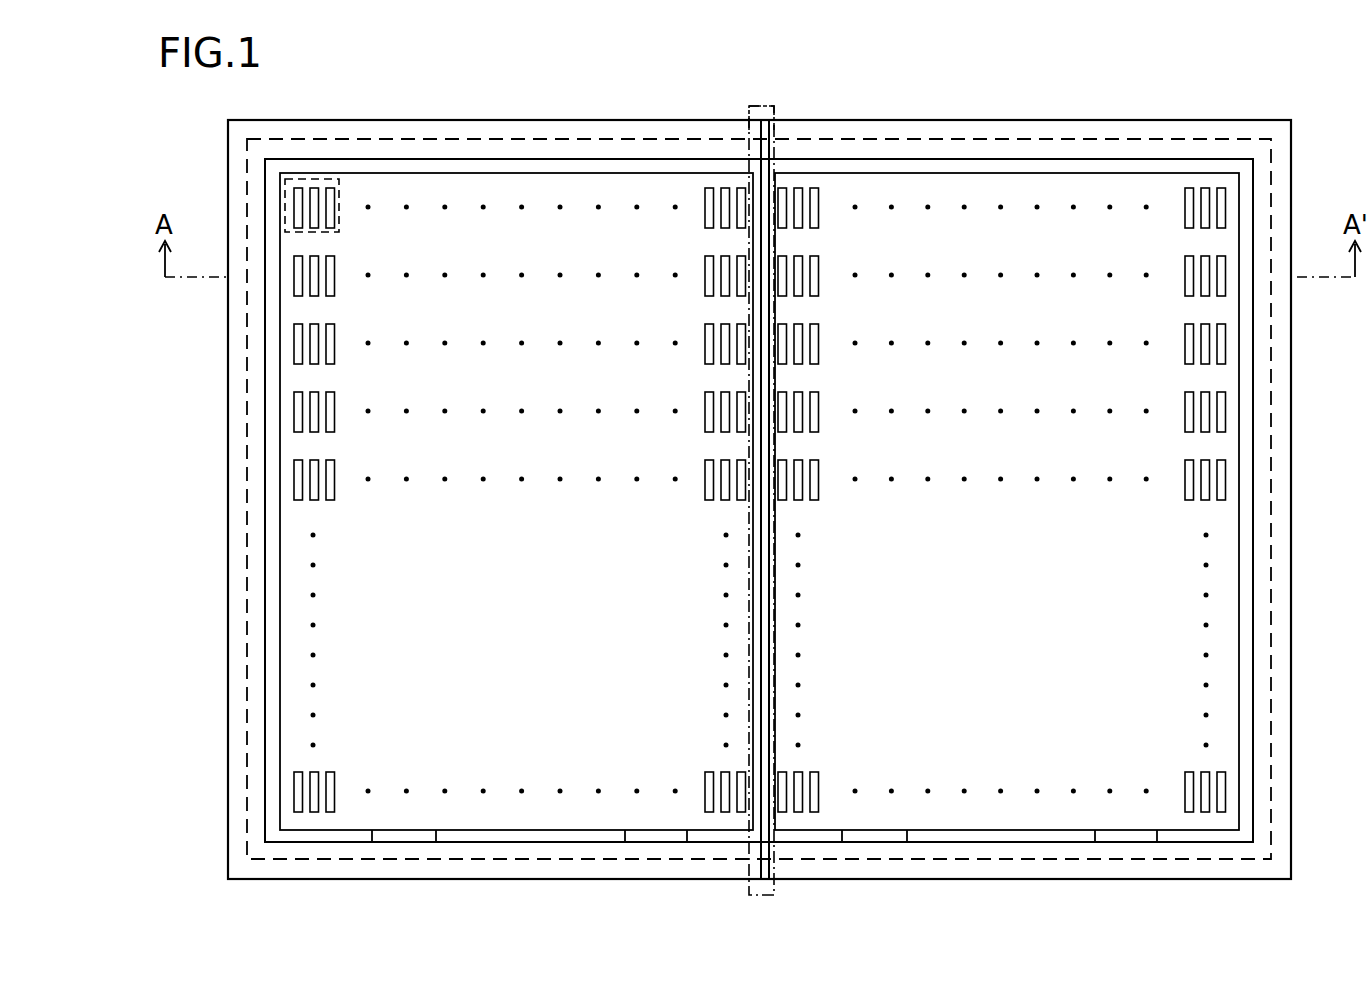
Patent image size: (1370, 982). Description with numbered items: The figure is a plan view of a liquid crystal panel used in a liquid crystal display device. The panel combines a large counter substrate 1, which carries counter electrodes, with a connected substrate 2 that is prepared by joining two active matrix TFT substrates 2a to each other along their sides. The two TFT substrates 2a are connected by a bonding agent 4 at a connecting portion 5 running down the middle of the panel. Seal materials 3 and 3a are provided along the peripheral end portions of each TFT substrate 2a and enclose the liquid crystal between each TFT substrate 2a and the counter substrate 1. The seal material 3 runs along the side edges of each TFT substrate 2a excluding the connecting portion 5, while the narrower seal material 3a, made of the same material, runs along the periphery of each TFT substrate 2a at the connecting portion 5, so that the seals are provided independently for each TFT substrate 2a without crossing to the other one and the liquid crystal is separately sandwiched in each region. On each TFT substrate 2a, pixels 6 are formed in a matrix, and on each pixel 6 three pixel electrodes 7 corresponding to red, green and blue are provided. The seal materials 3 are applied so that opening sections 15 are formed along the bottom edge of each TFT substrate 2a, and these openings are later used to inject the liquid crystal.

The counter substrate 1 is at (1101, 139).
The connected substrate 2 is at (1240, 120).
The TFT substrate 2a is at (582, 813).
The seal material 3 is at (1243, 422).
The seal material 3a is at (765, 185).
The bonding agent 4 is at (757, 150).
The connecting portion 5 is at (776, 110).
The pixel 6 is at (340, 186).
The pixel electrode 7 is at (329, 187).
The opening section 15 is at (390, 836).